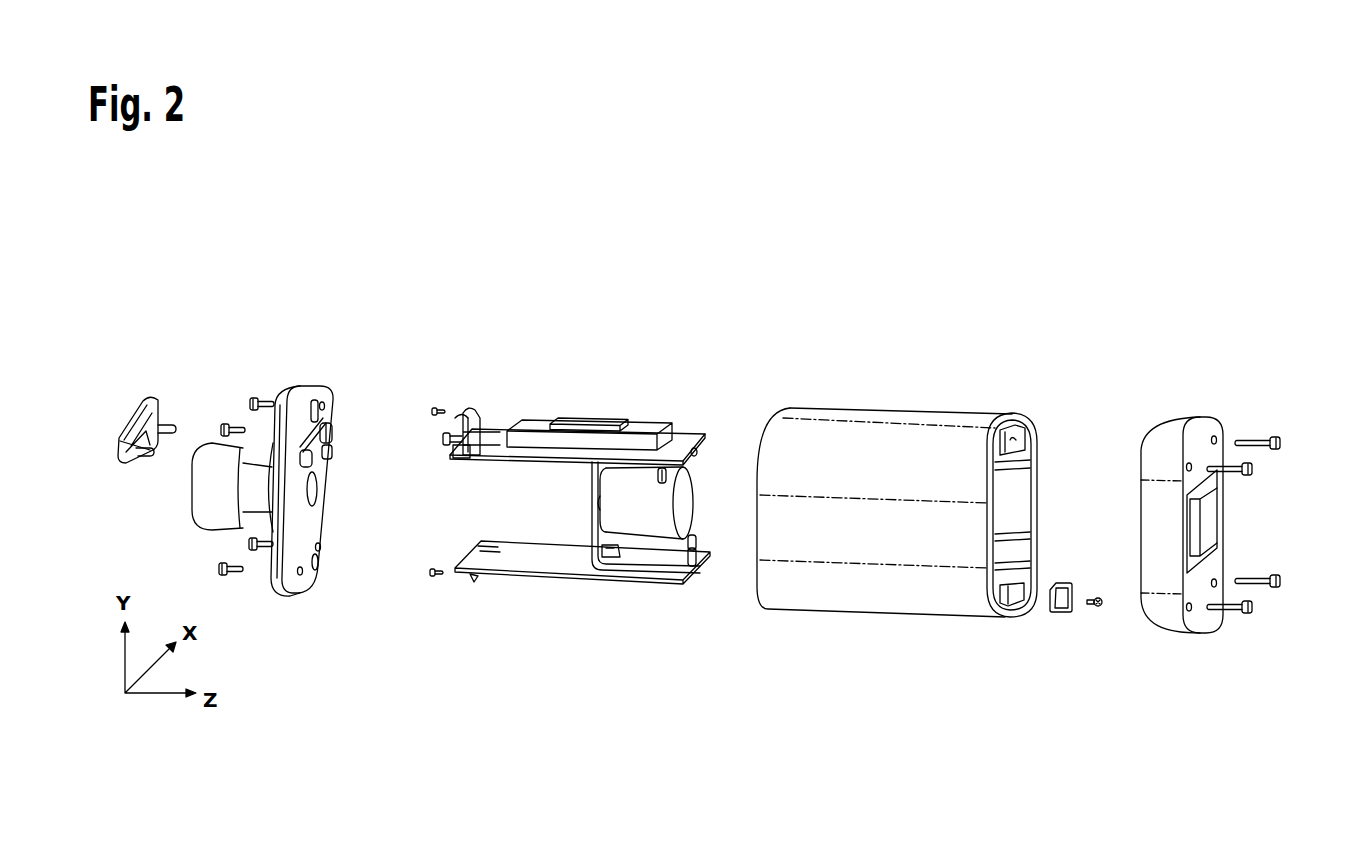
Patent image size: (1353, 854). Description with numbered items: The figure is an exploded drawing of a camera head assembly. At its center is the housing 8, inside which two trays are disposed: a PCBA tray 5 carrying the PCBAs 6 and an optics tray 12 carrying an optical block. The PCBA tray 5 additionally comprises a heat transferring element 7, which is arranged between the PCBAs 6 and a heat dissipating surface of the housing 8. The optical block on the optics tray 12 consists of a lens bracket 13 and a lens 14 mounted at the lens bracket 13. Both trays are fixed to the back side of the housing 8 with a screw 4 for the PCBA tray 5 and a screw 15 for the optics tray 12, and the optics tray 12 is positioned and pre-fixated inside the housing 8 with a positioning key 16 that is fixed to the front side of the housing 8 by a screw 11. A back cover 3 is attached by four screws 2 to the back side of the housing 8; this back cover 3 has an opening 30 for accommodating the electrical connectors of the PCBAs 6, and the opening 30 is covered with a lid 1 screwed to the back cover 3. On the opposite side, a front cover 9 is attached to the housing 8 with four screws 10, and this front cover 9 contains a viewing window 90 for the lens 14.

The lid 1 is at (134, 400).
The screws 2 is at (263, 398).
The back cover 3 is at (322, 388).
The opening 30 is at (330, 430).
The screw 4 is at (440, 405).
The PCBA tray 5 is at (458, 453).
The PCBAs 6 is at (681, 440).
The heat transferring element 7 is at (592, 420).
The housing 8 is at (880, 448).
The front cover 9 is at (1187, 417).
The screws 10 is at (1266, 437).
The opening in rear cover 90 is at (1208, 522).
The screw 11 is at (1094, 610).
The optics tray 12 is at (533, 567).
The lens bracket 13 is at (641, 572).
The lens 14 is at (650, 512).
The screw 15 is at (435, 578).
The positioning key 16 is at (1057, 612).